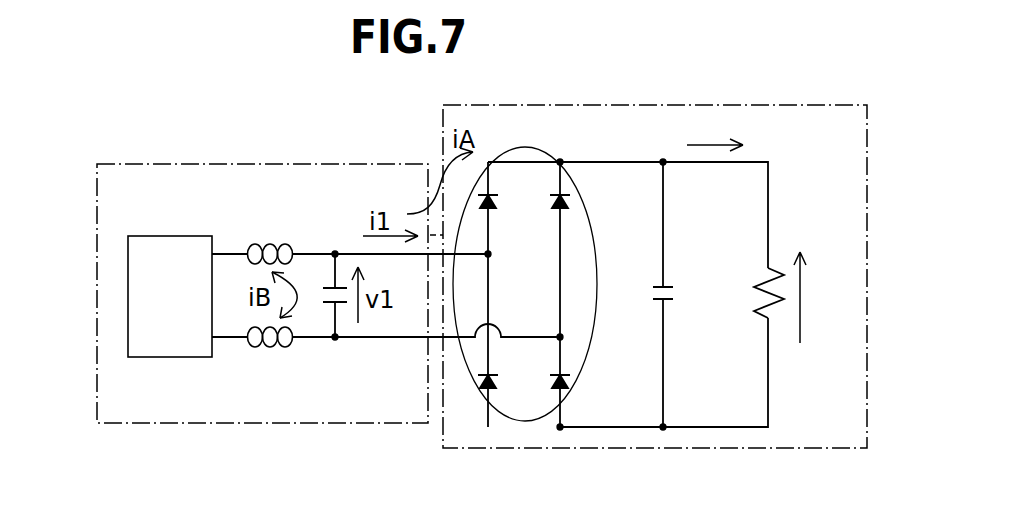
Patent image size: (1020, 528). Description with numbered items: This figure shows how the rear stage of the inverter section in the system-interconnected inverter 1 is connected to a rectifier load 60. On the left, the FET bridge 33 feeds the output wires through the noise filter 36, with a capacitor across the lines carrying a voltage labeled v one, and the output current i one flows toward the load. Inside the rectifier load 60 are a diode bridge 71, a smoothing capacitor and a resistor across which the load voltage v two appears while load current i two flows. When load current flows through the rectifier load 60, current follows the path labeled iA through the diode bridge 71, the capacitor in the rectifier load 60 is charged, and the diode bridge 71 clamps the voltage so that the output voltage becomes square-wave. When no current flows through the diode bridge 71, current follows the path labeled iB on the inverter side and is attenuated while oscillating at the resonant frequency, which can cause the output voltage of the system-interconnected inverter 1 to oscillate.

The system-interconnected inverter 1 is at (270, 177).
The FET bridge 33 is at (167, 245).
The noise filter 36 is at (303, 248).
The rectifier load 60 is at (867, 207).
The diode bridge 71 is at (482, 407).